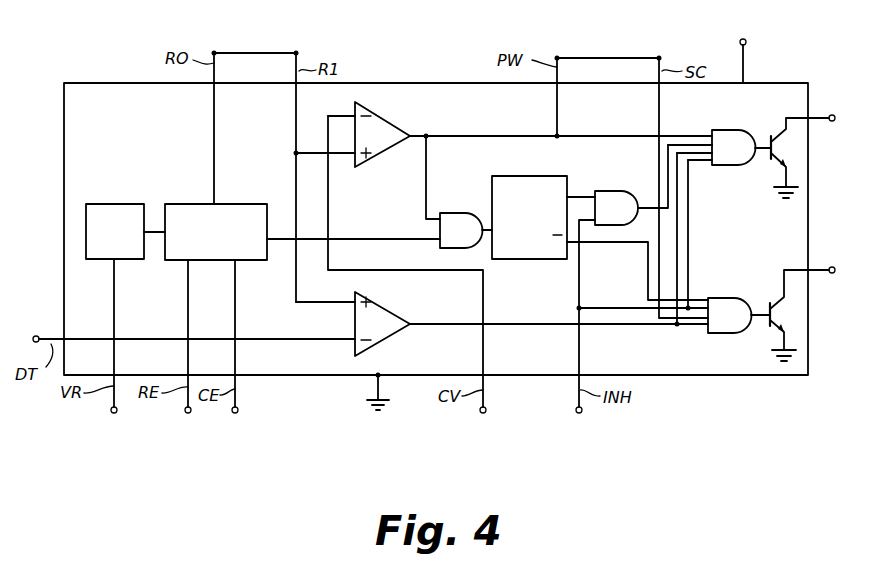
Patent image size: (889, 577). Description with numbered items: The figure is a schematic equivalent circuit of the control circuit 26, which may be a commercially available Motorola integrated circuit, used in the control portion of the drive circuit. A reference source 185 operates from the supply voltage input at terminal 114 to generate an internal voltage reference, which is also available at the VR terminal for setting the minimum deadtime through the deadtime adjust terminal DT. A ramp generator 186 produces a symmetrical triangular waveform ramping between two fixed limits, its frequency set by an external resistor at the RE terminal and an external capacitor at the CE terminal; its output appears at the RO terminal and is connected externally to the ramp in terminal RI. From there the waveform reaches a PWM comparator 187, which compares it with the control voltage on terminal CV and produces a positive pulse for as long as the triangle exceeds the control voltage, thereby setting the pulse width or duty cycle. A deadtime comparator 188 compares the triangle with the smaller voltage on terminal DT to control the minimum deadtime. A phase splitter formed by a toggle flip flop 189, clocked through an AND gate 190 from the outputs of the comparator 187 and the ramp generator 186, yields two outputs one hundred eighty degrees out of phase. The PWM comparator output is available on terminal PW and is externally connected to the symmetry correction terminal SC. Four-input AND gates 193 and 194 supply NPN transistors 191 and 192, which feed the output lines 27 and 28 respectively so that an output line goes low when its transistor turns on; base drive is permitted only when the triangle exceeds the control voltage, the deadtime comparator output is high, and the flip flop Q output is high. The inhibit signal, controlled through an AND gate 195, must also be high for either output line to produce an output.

The control circuit 26 is at (105, 82).
The terminal 114 is at (746, 42).
The reference source 185 is at (118, 204).
The ramp generator 186 is at (237, 204).
The PWM comparator 187 is at (384, 114).
The deadtime comparator 188 is at (382, 303).
The toggle flip flop 189 is at (526, 170).
The AND gate 190 is at (466, 212).
The NPN transistor 191 is at (772, 134).
The NPN transistor 192 is at (770, 300).
The four-input AND gate 193 is at (722, 130).
The four-input AND gate 194 is at (720, 297).
The AND gate 195 is at (622, 182).
The output line 27 is at (832, 122).
The output line 28 is at (830, 266).